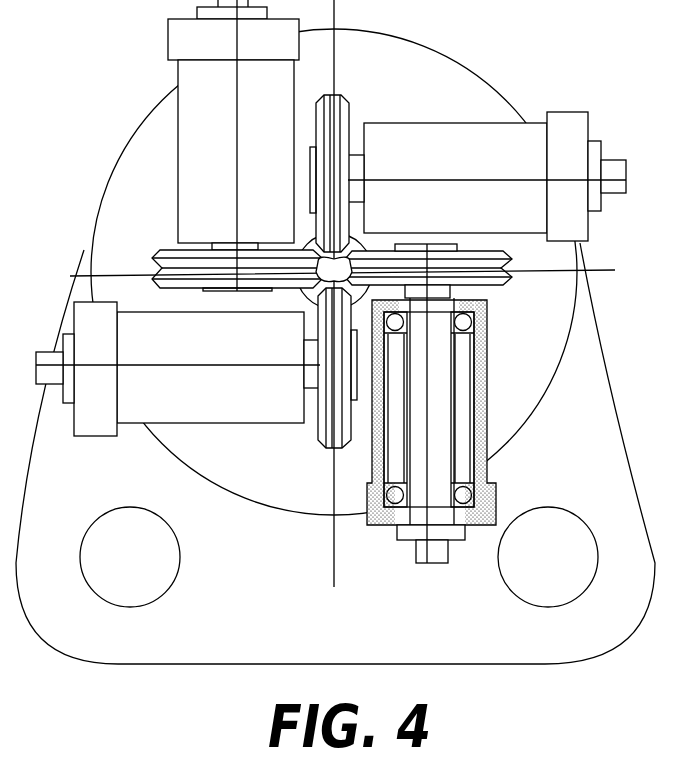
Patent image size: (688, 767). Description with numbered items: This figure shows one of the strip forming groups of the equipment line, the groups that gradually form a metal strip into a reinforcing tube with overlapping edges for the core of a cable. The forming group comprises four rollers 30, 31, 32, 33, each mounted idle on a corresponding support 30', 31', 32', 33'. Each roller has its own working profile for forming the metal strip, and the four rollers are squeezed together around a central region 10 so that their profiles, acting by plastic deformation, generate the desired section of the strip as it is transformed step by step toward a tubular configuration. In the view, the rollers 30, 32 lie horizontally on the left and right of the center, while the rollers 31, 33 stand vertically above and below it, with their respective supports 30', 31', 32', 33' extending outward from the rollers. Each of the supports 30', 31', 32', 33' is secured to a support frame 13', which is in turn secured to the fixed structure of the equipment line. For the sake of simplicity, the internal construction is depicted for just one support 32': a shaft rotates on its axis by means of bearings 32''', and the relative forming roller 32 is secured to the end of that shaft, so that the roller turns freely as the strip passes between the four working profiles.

The hub 10 is at (356, 260).
The support frame 13' is at (312, 272).
The roller 30 is at (222, 245).
The support 30' is at (233, 125).
The roller 31 is at (363, 158).
The support 31' is at (487, 157).
The roller 32 is at (460, 270).
The support 32' is at (465, 430).
The bearings 32''' is at (469, 409).
The roller 33 is at (328, 393).
The support 33' is at (178, 398).